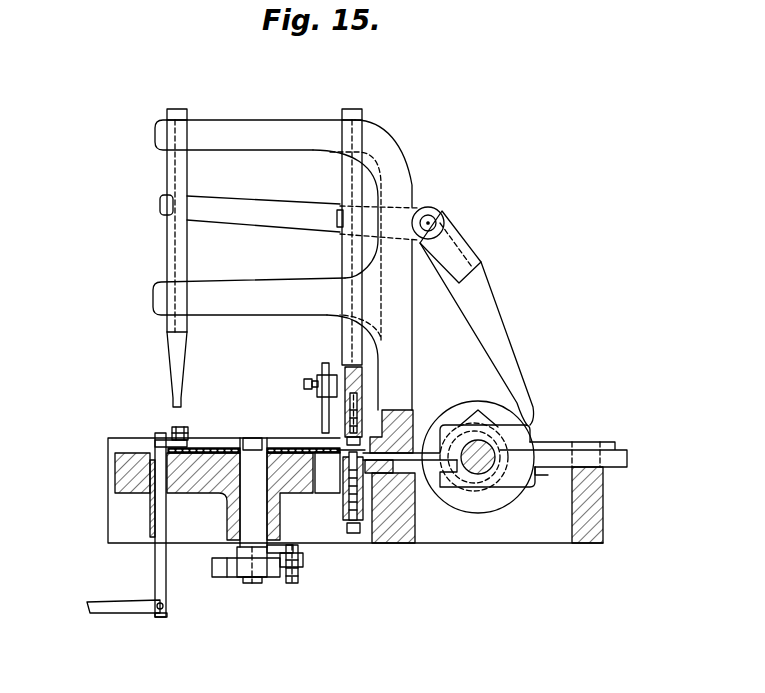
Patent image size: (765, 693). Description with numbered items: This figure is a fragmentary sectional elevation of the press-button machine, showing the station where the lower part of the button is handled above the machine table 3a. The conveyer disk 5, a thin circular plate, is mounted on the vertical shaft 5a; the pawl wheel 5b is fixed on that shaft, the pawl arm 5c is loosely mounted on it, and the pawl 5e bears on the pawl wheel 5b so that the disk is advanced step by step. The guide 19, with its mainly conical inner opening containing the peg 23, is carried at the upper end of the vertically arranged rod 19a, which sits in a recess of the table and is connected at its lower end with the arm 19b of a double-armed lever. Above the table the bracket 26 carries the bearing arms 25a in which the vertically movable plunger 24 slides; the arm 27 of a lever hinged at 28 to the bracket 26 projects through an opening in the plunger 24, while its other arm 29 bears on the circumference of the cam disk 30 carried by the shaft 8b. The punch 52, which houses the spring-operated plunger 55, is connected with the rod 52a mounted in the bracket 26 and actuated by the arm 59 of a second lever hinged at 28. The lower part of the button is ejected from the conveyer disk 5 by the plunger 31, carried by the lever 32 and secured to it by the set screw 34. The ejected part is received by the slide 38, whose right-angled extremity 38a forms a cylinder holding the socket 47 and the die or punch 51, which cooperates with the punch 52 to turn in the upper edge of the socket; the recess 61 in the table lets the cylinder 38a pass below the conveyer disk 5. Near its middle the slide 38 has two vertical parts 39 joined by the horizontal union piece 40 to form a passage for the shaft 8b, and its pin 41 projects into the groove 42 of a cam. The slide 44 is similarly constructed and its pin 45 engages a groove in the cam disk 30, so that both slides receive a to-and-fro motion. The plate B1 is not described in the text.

The bearing arms 25a is at (213, 130).
The plunger 24 is at (183, 169).
The bracket 26 is at (405, 170).
The arm of lever 27 is at (276, 210).
The arm of lever 59 is at (337, 214).
The rod 52a is at (358, 262).
The hinge 28 is at (430, 222).
The arm of lever 29 is at (490, 315).
The punch 52 is at (362, 392).
The plunger 55 is at (367, 410).
The plunger 31 is at (322, 410).
The lever 32 is at (327, 376).
The set screw 34 is at (304, 384).
The recess 61 is at (318, 452).
The guide 19 is at (158, 434).
The peg 23 is at (183, 435).
The rod 19a is at (154, 512).
The arm of double-armed lever 19b is at (117, 594).
The plate B1 is at (184, 452).
The machine table 3a is at (196, 482).
The conveyer disk 5 is at (231, 455).
The vertical shaft 5a is at (238, 517).
The pawl wheel 5b is at (218, 568).
The pawl arm 5c is at (300, 558).
The pawl 5e is at (300, 572).
The socket 47 is at (341, 464).
The die or punch 51 is at (344, 515).
The right-angled extremity 38a is at (347, 488).
The slide 38 is at (417, 518).
The slide 44 is at (419, 447).
The groove 42 is at (526, 440).
The pin or pivot 45 is at (470, 412).
The shaft 8b is at (478, 475).
The vertical parts 39 is at (438, 488).
The horizontal union piece 40 is at (476, 478).
The pin or pivot 41 is at (452, 508).
The cam disk 30 is at (512, 510).